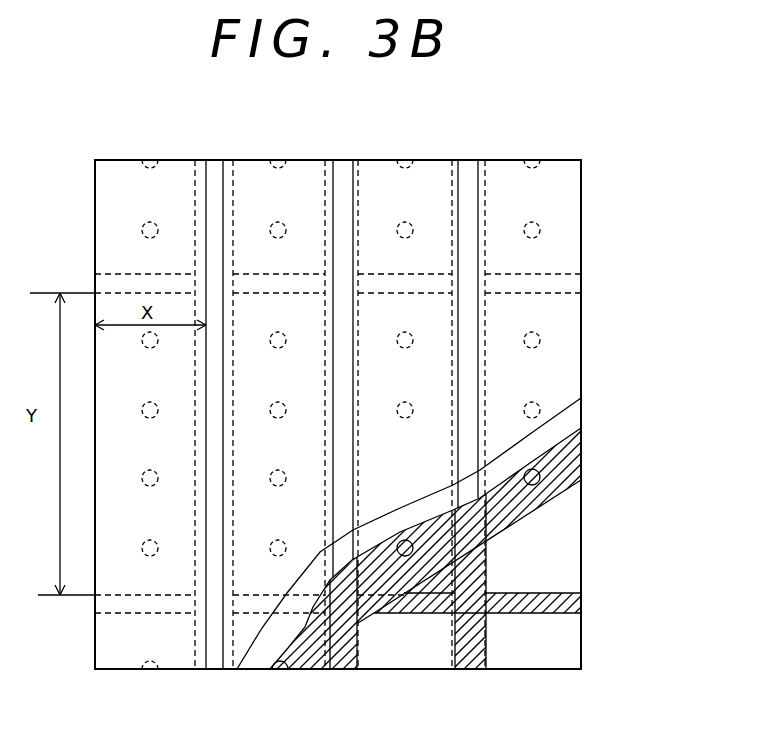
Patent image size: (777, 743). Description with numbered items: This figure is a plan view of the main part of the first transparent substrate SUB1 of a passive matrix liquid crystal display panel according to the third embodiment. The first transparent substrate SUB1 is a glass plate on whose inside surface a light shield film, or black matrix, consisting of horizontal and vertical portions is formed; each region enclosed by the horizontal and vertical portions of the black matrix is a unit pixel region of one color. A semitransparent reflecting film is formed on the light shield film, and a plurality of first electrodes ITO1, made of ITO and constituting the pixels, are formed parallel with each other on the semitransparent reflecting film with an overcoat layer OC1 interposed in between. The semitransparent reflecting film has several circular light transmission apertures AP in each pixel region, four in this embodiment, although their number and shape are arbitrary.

The first electrodes ITO1 is at (458, 158).
The overcoat layer OC1 is at (575, 417).
The light transmission apertures AP is at (540, 477).
The first transparent substrate SUB1 is at (568, 632).